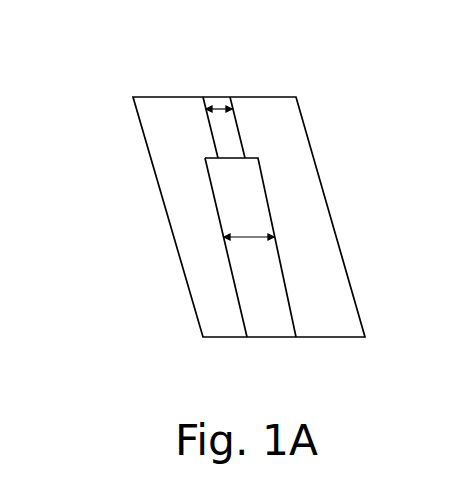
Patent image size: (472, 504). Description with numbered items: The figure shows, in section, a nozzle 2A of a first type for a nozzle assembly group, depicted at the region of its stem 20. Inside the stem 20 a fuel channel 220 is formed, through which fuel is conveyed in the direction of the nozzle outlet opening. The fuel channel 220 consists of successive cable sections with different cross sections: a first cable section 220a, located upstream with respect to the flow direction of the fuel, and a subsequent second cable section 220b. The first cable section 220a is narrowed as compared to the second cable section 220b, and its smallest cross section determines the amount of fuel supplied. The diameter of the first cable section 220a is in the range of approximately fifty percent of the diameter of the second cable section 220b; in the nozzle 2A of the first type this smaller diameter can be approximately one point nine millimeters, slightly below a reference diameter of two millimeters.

The nozzle of a first type 2A is at (115, 83).
The stem 20 is at (306, 116).
The fuel channel 220 is at (214, 274).
The first cable section 220a is at (211, 128).
The second cable section 220b is at (262, 313).